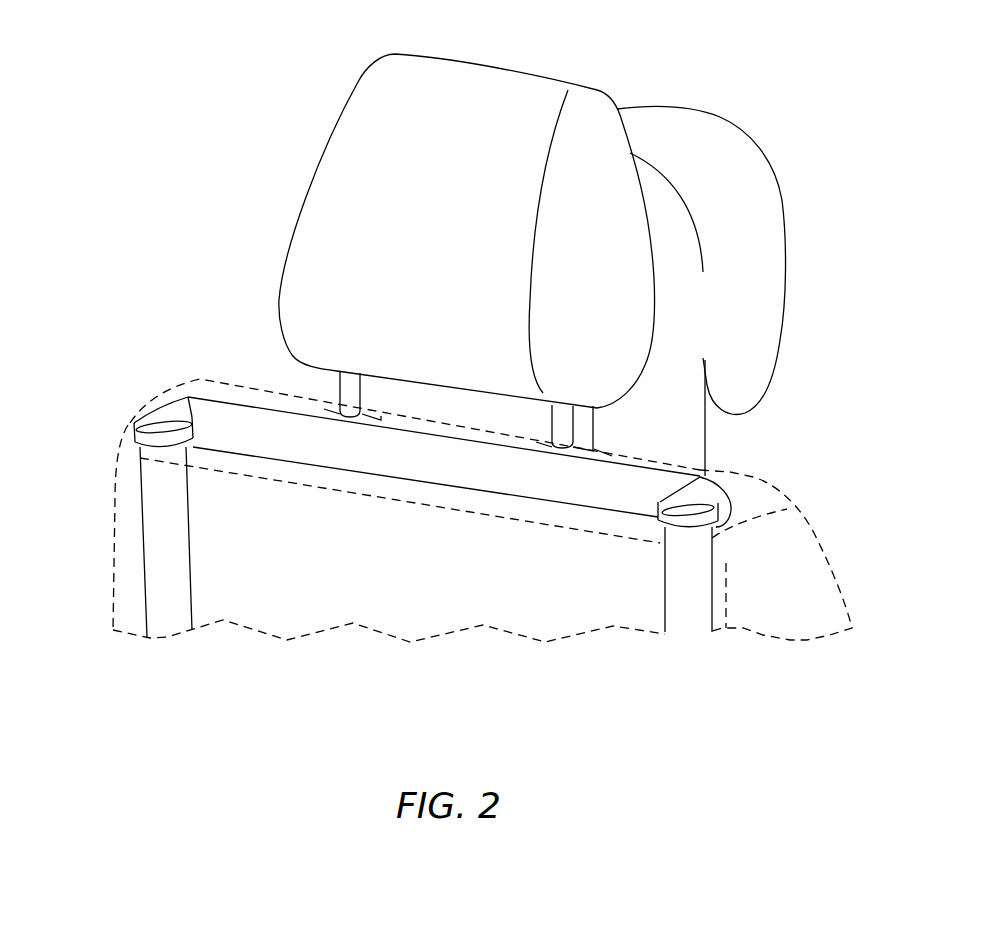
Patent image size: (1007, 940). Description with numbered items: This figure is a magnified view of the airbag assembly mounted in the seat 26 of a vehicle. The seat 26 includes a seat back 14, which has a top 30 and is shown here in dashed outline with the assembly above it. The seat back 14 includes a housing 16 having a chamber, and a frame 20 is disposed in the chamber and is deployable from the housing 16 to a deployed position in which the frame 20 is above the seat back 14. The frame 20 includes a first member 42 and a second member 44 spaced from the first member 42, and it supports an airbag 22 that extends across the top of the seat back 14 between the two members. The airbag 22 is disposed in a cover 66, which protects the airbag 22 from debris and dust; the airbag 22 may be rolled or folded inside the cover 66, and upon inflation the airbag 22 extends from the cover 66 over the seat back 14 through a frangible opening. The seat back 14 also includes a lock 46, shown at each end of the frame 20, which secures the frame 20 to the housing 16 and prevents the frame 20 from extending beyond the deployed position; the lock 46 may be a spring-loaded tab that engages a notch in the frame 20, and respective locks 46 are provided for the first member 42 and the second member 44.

The seat back 14 is at (112, 497).
The housing 16 is at (188, 530).
The frame 20 is at (152, 410).
The airbag 22 is at (240, 420).
The seat 26 is at (197, 160).
The top 30 is at (766, 508).
The first member 42 is at (678, 498).
The second member 44 is at (171, 412).
The lock 46 is at (128, 432).
The cover 66 is at (277, 420).